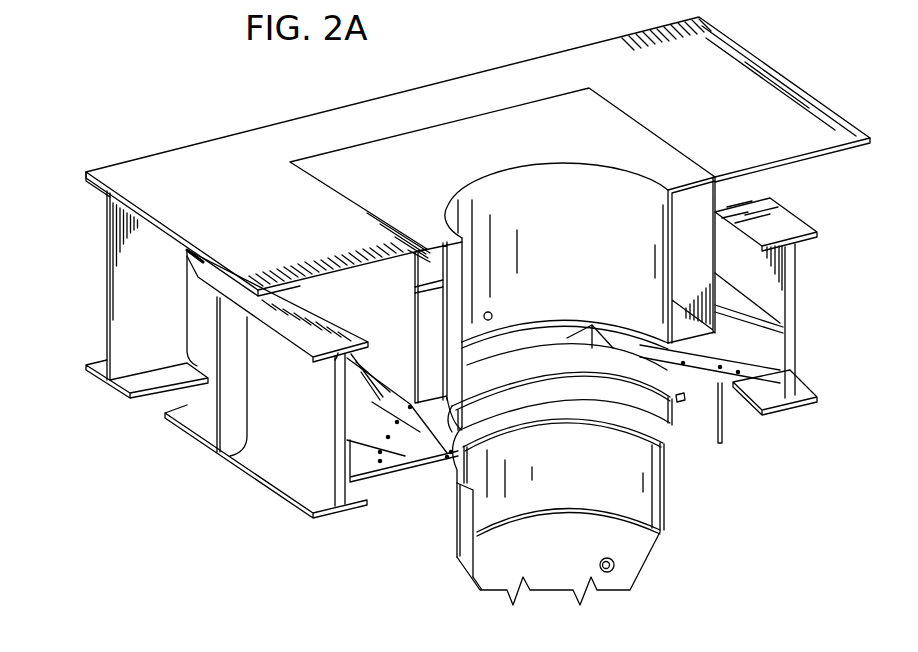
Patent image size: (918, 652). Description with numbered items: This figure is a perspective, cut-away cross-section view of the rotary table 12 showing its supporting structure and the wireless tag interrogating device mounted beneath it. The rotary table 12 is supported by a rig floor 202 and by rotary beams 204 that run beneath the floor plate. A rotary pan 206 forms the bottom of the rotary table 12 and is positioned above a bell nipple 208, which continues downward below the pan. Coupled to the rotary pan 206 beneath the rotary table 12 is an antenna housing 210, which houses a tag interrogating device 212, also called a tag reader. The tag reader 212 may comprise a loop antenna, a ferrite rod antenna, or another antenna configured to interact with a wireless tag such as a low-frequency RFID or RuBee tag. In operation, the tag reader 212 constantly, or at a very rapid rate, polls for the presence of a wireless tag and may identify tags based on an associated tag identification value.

The rig floor 202 is at (153, 164).
The rotary beams 204 is at (100, 283).
The rotary pan 206 is at (358, 462).
The bell nipple 208 is at (640, 502).
The antenna housing 210 is at (400, 448).
The tag interrogating device 212 is at (681, 402).
The rotary table 12 is at (565, 173).